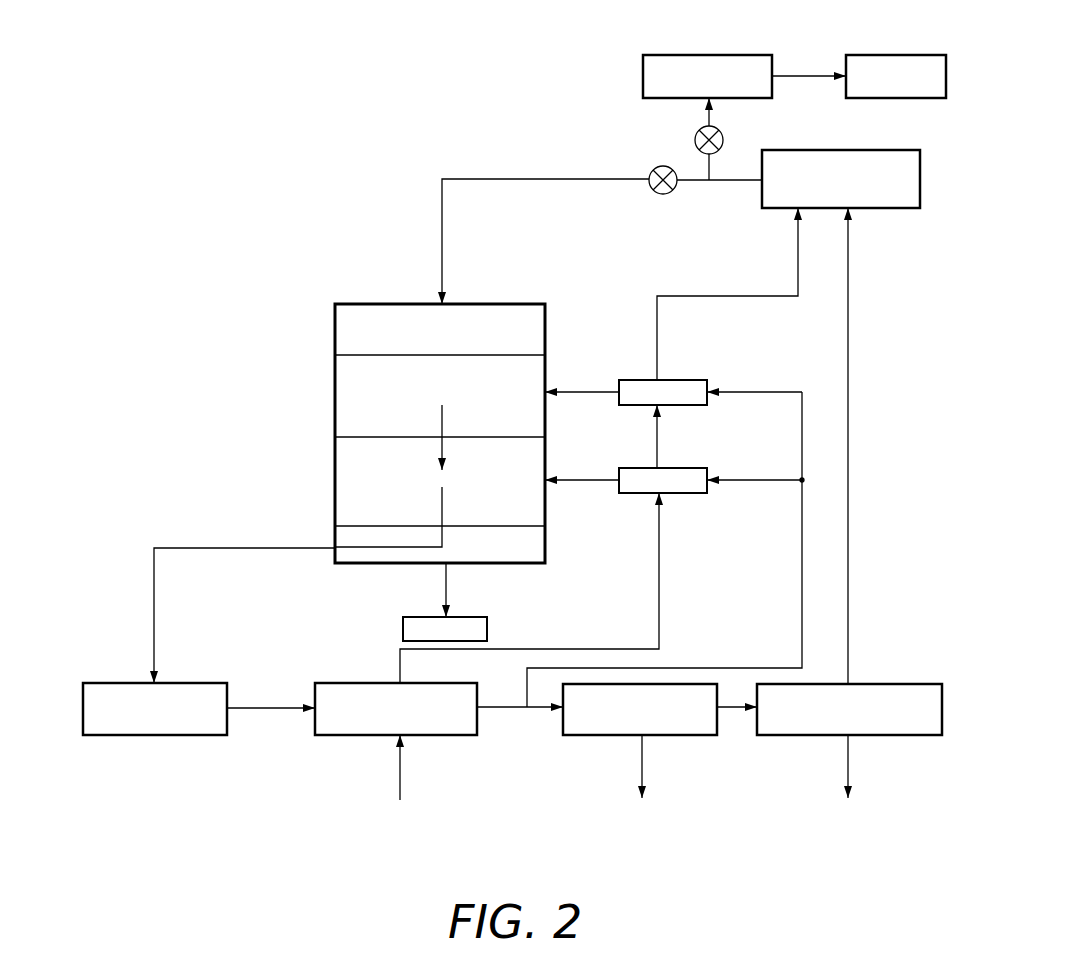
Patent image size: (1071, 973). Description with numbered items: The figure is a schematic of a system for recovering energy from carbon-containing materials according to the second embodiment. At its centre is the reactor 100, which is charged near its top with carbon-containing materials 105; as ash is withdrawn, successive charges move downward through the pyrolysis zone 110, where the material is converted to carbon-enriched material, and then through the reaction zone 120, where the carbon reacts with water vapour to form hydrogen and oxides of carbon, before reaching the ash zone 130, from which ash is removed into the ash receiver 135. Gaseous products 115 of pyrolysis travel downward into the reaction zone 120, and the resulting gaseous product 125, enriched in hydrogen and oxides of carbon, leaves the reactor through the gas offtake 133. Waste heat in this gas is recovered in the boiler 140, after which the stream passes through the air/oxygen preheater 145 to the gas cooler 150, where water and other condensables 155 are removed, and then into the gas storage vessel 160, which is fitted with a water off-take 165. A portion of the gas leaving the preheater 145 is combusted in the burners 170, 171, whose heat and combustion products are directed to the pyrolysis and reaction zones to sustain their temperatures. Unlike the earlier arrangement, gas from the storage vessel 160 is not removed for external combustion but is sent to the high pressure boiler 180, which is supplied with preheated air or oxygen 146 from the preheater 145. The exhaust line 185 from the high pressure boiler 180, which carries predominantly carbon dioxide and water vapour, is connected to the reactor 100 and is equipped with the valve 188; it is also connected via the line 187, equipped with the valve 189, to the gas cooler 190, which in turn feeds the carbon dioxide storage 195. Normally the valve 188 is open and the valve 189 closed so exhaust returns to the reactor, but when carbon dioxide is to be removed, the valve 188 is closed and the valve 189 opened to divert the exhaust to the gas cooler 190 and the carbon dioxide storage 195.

The reactor 100 is at (335, 343).
The carbon-containing materials 105 is at (376, 312).
The pyrolysis zone 110 is at (355, 375).
The gaseous products of pyrolysis 115 is at (469, 435).
The reaction zone 120 is at (355, 450).
The gaseous product 125 is at (416, 516).
The ash zone 130 is at (527, 542).
The gas offtake 133 is at (333, 548).
The ash receiver 135 is at (422, 617).
The boiler 140 is at (207, 727).
The air/oxygen preheater 145 is at (440, 727).
The preheated air or oxygen 146 is at (400, 770).
The gas cooler 150 is at (680, 727).
The water and other condensables 155 is at (641, 758).
The gas storage vessel 160 is at (882, 725).
The water off-take 165 is at (846, 756).
The burner 170 is at (690, 380).
The burner 171 is at (688, 468).
The high pressure boiler 180 is at (780, 210).
The exhaust line 185 is at (442, 179).
The line 187 is at (710, 166).
The valve 188 is at (652, 170).
The valve 189 is at (696, 130).
The gas cooler 190 is at (752, 55).
The carbon dioxide storage 195 is at (912, 55).